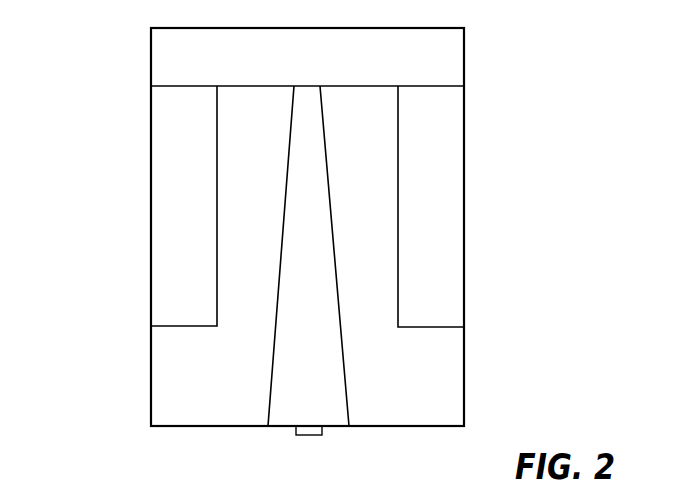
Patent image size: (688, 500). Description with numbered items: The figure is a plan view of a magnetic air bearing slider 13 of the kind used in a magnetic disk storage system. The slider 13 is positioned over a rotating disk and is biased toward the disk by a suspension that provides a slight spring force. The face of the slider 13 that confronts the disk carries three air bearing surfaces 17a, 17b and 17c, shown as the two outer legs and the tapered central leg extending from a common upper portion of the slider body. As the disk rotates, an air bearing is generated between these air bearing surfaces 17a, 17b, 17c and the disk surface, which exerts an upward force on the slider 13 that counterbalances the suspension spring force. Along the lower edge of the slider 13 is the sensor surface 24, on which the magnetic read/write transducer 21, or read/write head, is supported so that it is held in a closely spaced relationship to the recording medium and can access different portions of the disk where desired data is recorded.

The air bearing slider 13 is at (150, 394).
The air bearing surface 17a is at (156, 159).
The air bearing surface 17b is at (460, 158).
The air bearing surface 17c is at (291, 159).
The magnetic read/write transducer 21 is at (312, 436).
The sensor surface 24 is at (279, 427).